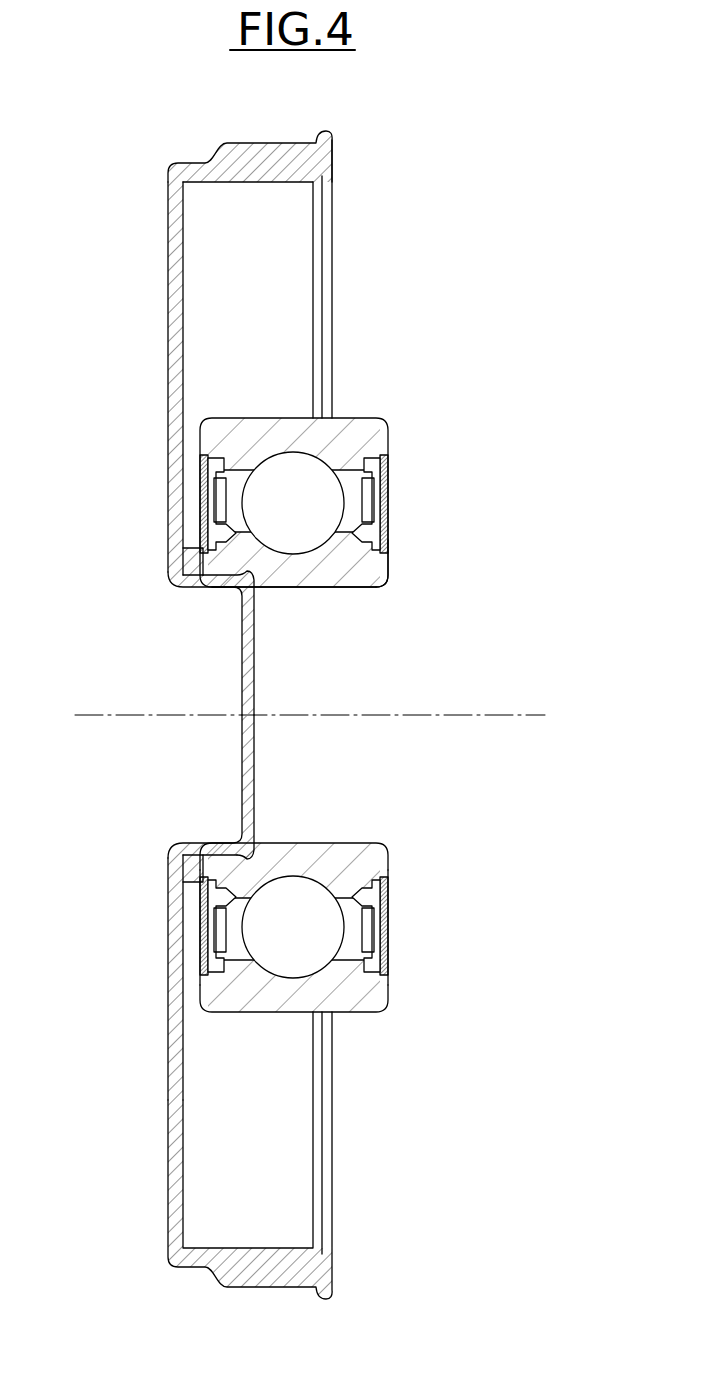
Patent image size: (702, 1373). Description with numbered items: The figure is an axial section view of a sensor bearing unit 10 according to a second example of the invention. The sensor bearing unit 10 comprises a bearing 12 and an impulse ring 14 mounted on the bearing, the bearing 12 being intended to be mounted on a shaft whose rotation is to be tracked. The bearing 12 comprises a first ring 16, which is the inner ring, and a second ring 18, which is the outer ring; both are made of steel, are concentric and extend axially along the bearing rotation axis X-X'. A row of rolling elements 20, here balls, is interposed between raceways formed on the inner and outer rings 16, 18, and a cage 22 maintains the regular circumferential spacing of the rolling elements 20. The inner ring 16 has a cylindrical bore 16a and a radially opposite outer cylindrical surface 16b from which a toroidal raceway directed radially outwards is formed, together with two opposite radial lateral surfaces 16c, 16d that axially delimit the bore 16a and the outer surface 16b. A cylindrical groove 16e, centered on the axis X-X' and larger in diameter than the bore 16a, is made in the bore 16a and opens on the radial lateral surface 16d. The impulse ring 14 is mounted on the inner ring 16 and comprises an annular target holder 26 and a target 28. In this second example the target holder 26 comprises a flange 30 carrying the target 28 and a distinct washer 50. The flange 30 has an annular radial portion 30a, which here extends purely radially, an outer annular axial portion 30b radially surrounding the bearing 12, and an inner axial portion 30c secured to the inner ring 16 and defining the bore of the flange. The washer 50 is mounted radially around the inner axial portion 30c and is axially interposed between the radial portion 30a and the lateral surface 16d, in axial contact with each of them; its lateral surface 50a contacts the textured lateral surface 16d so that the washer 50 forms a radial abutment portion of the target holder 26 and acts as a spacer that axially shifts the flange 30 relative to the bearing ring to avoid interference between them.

The sensor bearing unit 10 is at (471, 268).
The bearing 12 is at (334, 510).
The impulse ring 14 is at (160, 252).
The first ring 16 is at (378, 854).
The bore 16a is at (325, 592).
The outer cylindrical surface 16b is at (383, 523).
The radial lateral surface 16c is at (386, 566).
The radial lateral surface 16d is at (190, 880).
The cylindrical groove 16e is at (227, 830).
The second ring 18 is at (385, 997).
The rolling elements 20 is at (308, 936).
The cage 22 is at (386, 942).
The target holder 26 is at (163, 1114).
The target 28 is at (322, 172).
The flange 30 is at (163, 993).
The annular radial portion 30a is at (190, 490).
The outer annular axial portion 30b is at (266, 150).
The inner axial portion 30c is at (228, 590).
The washer 50 is at (205, 862).
The lateral surface 50a is at (200, 548).
The bearing rotation axis X-X' is at (311, 687).